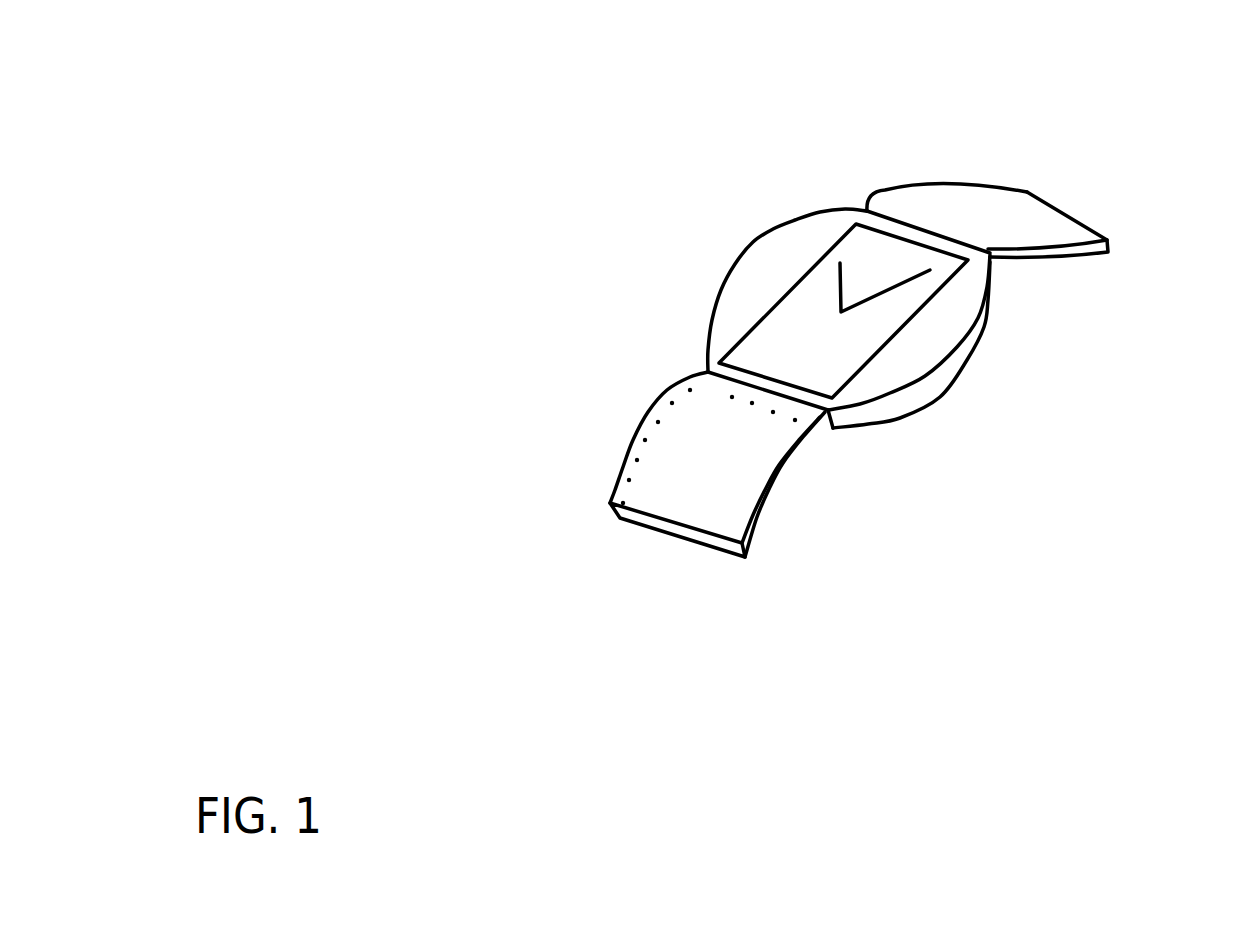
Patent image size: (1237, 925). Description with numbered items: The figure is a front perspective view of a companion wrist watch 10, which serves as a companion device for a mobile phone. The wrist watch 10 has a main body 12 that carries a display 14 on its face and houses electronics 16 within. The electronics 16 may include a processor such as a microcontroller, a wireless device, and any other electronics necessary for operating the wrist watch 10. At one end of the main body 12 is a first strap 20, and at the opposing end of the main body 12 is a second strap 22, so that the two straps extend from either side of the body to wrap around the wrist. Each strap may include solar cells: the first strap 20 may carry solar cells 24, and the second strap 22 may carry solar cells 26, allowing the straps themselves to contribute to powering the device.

The companion wrist watch 10 is at (620, 237).
The main body 12 is at (703, 257).
The display 14 is at (825, 272).
The electronics 16 is at (928, 403).
The first strap 20 is at (708, 568).
The second strap 22 is at (1077, 257).
The solar cells 24 is at (722, 462).
The solar cells 26 is at (947, 208).